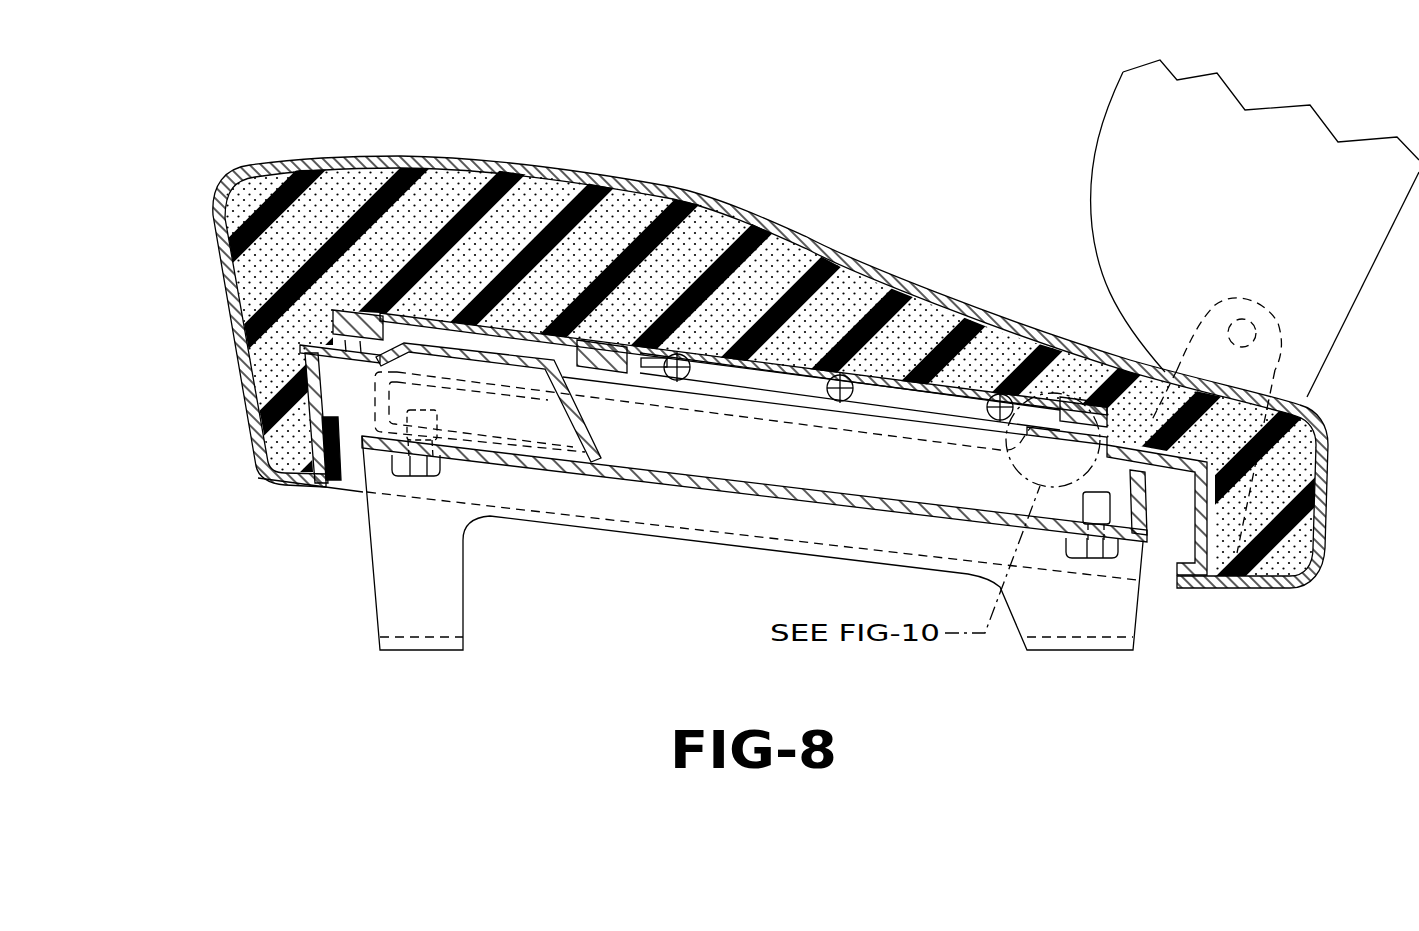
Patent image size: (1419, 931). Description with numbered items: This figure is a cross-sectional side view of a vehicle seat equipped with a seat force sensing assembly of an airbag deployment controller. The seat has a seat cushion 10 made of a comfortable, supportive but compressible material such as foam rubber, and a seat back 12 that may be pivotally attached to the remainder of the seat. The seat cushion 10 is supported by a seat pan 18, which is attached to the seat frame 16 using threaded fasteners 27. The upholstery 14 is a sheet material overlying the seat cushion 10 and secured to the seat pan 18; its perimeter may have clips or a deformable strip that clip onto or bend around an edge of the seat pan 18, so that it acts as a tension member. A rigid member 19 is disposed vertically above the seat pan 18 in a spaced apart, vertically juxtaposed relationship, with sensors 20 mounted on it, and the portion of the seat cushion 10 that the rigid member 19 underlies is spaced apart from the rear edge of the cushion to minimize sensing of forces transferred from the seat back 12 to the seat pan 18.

The seat cushion 10 is at (617, 238).
The seat back 12 is at (1113, 136).
The upholstery 14 is at (781, 243).
The seat frame 16 is at (697, 485).
The seat pan 18 is at (313, 433).
The rigid member 19 is at (333, 333).
The sensor 20 is at (340, 345).
The threaded fastener 27 is at (413, 463).